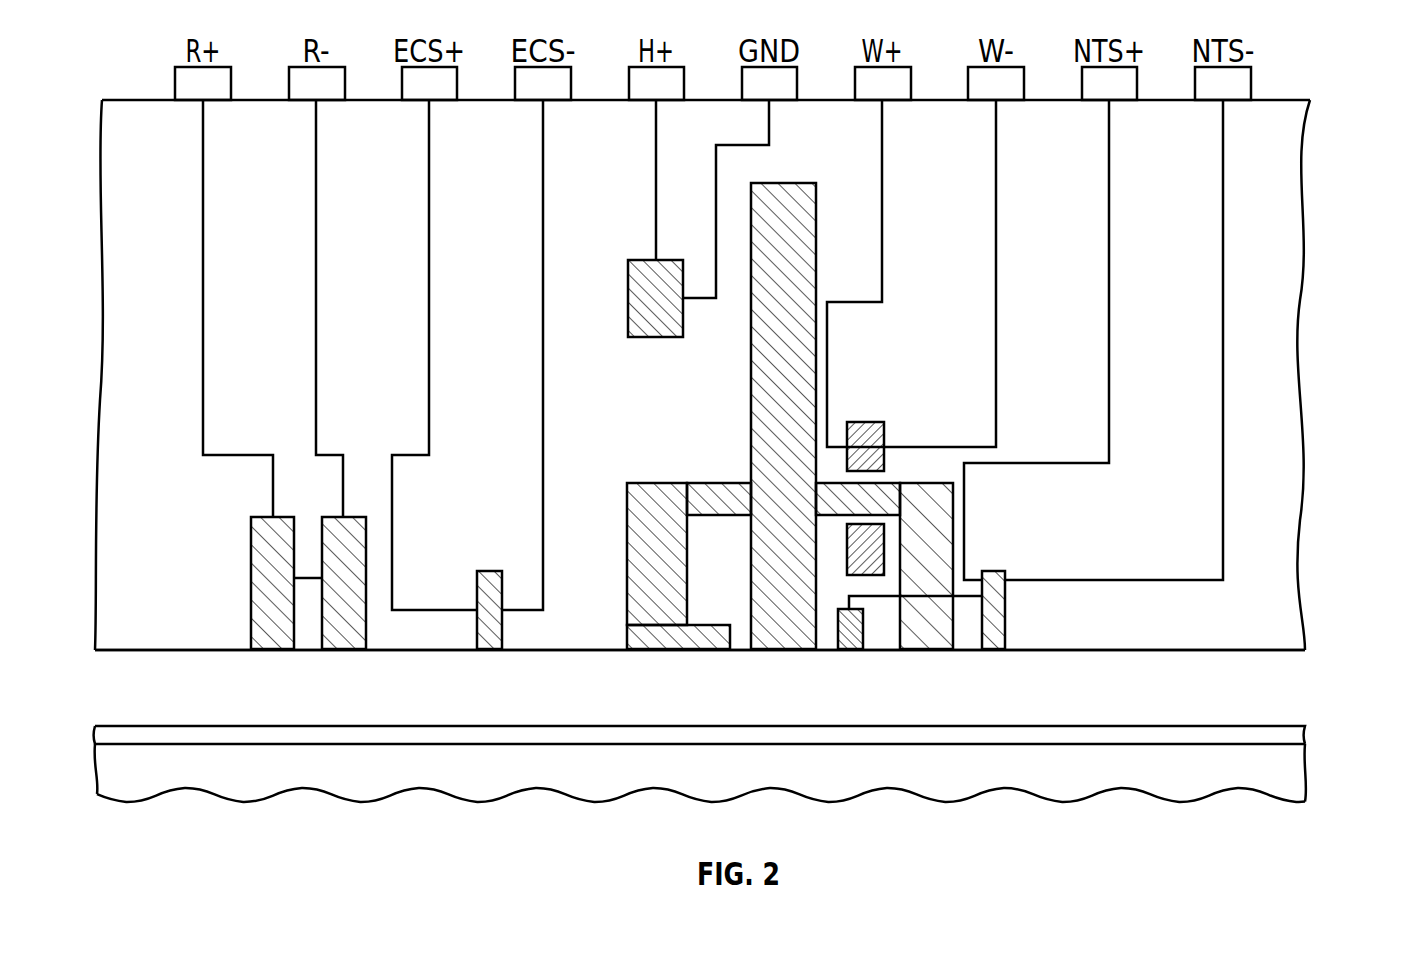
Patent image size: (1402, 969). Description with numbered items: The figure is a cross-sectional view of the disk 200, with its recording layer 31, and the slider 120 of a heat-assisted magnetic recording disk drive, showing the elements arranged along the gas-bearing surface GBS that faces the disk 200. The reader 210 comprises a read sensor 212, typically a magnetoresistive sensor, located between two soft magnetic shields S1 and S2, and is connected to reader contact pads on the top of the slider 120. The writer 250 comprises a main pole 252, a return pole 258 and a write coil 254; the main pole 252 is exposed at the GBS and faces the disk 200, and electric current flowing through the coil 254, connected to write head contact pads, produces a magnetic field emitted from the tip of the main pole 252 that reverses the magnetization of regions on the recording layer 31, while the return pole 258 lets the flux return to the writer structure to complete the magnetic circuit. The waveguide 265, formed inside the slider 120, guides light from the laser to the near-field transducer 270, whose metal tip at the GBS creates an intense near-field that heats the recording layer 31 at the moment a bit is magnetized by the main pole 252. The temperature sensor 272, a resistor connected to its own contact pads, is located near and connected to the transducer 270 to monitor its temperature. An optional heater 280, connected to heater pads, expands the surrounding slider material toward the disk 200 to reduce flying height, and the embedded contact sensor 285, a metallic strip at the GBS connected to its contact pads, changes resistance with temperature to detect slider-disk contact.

The slider 120 is at (1292, 223).
The disk 200 is at (1293, 777).
The recording layer 31 is at (1293, 737).
The reader 210 is at (308, 592).
The soft magnetic shield S1 is at (251, 570).
The soft magnetic shield S2 is at (366, 548).
The read sensor 212 is at (307, 650).
The embedded contact sensor 285 is at (488, 650).
The heater 280 is at (645, 260).
The writer 250 is at (622, 362).
The main pole 252 is at (678, 650).
The waveguide 265 is at (817, 258).
The write coil 254 is at (872, 422).
The return pole 258 is at (932, 650).
The near-field transducer 270 is at (850, 650).
The NFT temperature sensor 272 is at (992, 650).
The gas-bearing surface GBS is at (1117, 650).